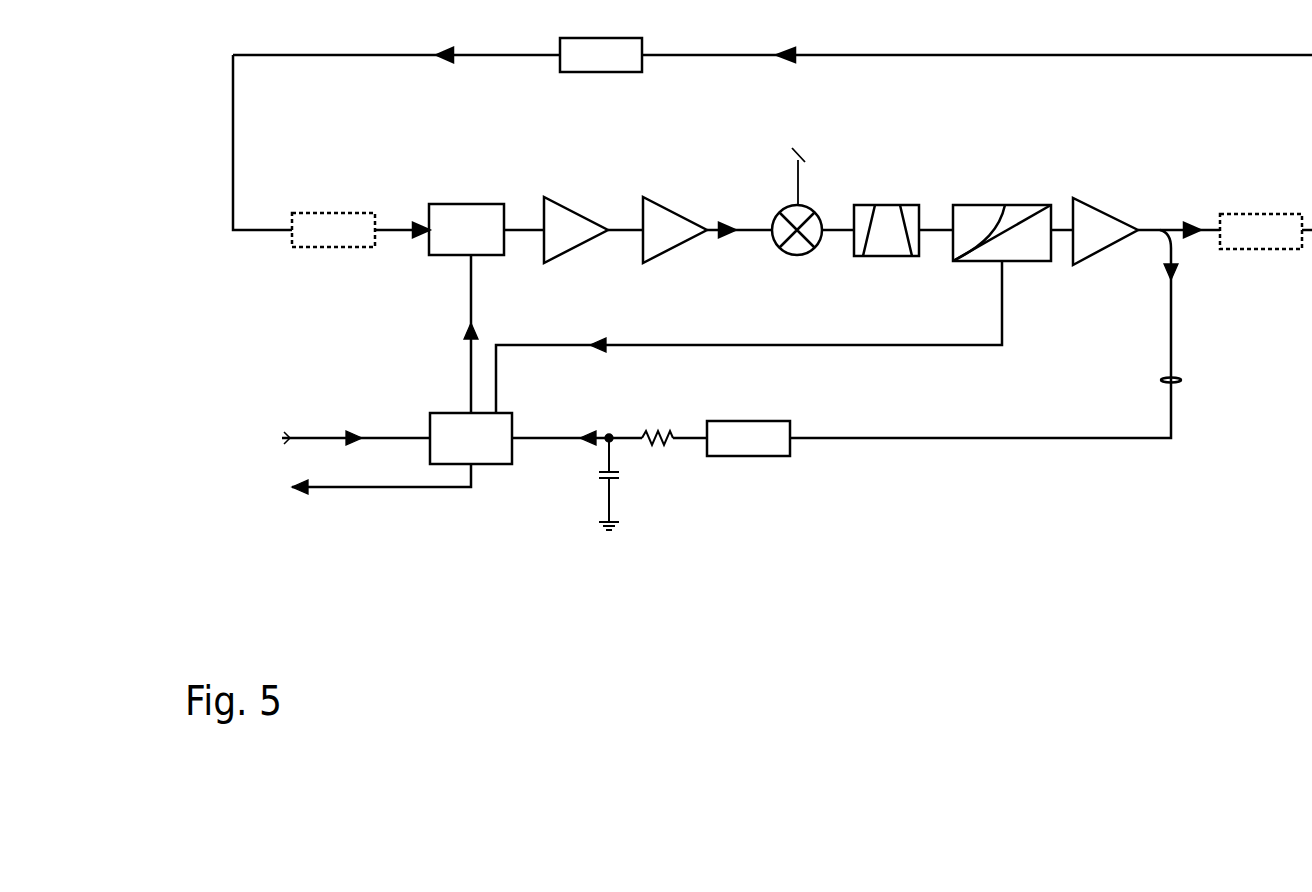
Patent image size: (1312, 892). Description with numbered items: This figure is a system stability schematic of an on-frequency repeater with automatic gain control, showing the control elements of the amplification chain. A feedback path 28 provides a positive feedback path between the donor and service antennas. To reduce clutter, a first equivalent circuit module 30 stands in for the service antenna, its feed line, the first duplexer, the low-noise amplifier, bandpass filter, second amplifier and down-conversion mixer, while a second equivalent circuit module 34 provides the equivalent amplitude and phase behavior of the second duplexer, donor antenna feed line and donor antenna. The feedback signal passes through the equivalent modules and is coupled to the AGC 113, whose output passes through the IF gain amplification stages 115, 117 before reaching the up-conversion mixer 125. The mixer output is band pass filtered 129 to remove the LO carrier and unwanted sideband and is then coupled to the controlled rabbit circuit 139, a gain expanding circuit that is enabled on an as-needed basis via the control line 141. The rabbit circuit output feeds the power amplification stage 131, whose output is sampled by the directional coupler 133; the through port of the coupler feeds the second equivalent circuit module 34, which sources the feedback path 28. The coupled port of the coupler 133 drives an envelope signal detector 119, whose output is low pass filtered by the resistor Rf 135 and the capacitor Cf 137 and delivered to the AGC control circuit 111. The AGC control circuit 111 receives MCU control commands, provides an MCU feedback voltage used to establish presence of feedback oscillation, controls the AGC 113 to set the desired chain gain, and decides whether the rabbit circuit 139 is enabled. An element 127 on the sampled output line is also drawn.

The feedback path 28 is at (594, 74).
The circuit module S1 30 is at (332, 212).
The AGC 113 is at (470, 204).
The IF gain amplification stage 115 is at (578, 260).
The IF gain amplification stage 117 is at (670, 260).
The up-conversion mixer 125 is at (777, 214).
The band pass filter 129 is at (878, 205).
The controlled rabbit circuit 139 is at (978, 202).
The power amplification stage 131 is at (1088, 198).
The circuit module S3 34 is at (1280, 214).
The directional coupler 133 is at (1160, 242).
The attenuator 127 is at (1182, 381).
The control line 141 is at (908, 340).
The AGC control circuit 111 is at (457, 412).
The envelope signal detector 119 is at (740, 420).
The resistor Rf 135 is at (672, 447).
The capacitor Cf 137 is at (598, 475).